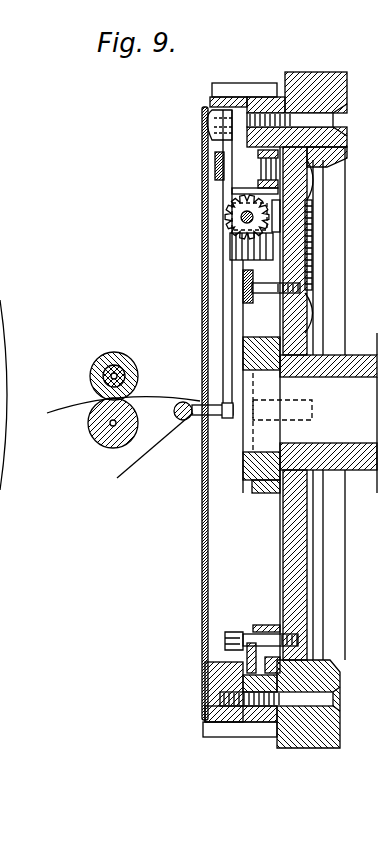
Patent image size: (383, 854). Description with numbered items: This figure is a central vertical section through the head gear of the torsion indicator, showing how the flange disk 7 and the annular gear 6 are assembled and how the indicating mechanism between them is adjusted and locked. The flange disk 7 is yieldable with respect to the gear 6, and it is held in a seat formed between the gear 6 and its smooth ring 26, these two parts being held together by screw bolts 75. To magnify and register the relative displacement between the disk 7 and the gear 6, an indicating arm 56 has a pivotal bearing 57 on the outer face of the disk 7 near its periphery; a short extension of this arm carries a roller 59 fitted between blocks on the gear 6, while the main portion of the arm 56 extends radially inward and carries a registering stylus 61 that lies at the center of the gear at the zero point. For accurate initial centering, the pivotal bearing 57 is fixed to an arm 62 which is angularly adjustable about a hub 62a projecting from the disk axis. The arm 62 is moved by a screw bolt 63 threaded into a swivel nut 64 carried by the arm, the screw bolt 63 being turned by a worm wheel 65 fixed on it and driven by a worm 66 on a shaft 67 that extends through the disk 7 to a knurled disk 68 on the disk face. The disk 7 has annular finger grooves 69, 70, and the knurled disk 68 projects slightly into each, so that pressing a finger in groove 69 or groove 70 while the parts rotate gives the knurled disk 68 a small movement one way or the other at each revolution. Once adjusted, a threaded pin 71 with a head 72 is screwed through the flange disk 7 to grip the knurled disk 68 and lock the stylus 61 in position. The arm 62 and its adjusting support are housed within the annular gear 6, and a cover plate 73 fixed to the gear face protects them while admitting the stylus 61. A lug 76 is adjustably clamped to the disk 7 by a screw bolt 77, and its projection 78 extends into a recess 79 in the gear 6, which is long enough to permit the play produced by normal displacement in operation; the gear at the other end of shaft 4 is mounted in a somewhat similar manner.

The shaft 4 is at (293, 412).
The gear 6 is at (203, 730).
The disk flange 7 is at (313, 565).
The smooth ring 26 is at (307, 748).
The indicating arm 56 is at (227, 338).
The pivotal bearing 57 is at (215, 176).
The roller 59 is at (212, 118).
The registering stylus 61 is at (200, 399).
The arm 62 is at (262, 318).
The hub 62a is at (243, 470).
The screw bolt 63 is at (225, 208).
The swivel nut 64 is at (232, 191).
The worm wheel 65 is at (225, 218).
The worm 66 is at (232, 240).
The shaft 67 is at (310, 192).
The knurled disk 68 is at (312, 248).
The annular finger groove 69 is at (340, 160).
The annular finger groove 70 is at (307, 307).
The threaded pin 71 is at (243, 272).
The head 72 is at (262, 292).
The cover plate 73 is at (202, 548).
The screw bolt 75 is at (277, 98).
The lug 76 is at (268, 627).
The screw bolt 77 is at (240, 628).
The projection 78 is at (200, 683).
The recess 79 is at (205, 692).